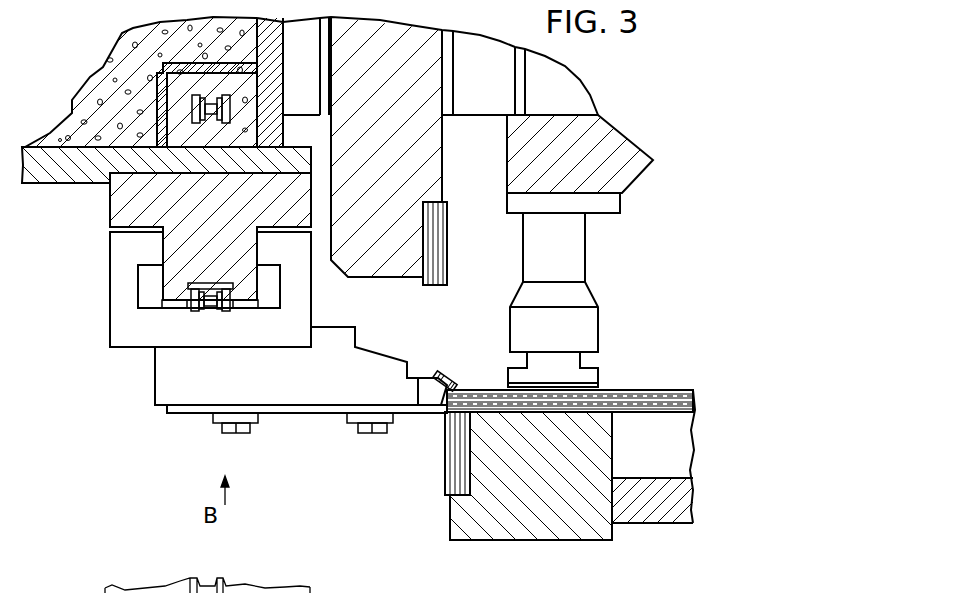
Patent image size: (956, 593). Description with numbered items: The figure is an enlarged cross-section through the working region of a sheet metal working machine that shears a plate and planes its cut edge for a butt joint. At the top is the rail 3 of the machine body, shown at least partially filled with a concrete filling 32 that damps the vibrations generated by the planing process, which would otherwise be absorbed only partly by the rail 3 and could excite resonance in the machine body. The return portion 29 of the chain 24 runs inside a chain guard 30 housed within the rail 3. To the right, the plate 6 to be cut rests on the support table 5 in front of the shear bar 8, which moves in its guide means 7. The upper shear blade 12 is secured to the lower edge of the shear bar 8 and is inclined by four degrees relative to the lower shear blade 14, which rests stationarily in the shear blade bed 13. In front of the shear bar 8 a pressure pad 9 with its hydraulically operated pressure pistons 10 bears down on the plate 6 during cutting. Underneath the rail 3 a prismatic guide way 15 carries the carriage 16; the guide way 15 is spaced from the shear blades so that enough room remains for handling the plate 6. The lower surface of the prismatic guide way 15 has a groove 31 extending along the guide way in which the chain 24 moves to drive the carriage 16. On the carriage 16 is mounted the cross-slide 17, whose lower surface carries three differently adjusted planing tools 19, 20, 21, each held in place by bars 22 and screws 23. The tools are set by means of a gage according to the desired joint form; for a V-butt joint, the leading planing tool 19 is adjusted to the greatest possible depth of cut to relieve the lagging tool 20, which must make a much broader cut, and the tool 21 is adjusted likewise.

The rail 3 is at (45, 183).
The support table 5 is at (647, 508).
The plate 6 is at (662, 387).
The guide means 7 is at (447, 82).
The shear bar 8 is at (432, 160).
The pressure pad 9 is at (618, 138).
The pressure pistons 10 is at (598, 378).
The upper shear blade 12 is at (438, 248).
The shear blade bed 13 is at (528, 530).
The lower shear blade 14 is at (457, 480).
The prismatic guide way 15 is at (118, 210).
The carriage 16 is at (118, 285).
The cross-slide 17 is at (155, 392).
The planing tool 19 is at (427, 387).
The planing tool 20 is at (442, 375).
The planing tool 21 is at (458, 378).
The bars 22 is at (217, 418).
The screws 23 is at (358, 428).
The chain 24 is at (210, 303).
The return portion 29 is at (192, 105).
The chain guard 30 is at (177, 83).
The groove 31 is at (217, 280).
The concrete wall 32 is at (143, 43).